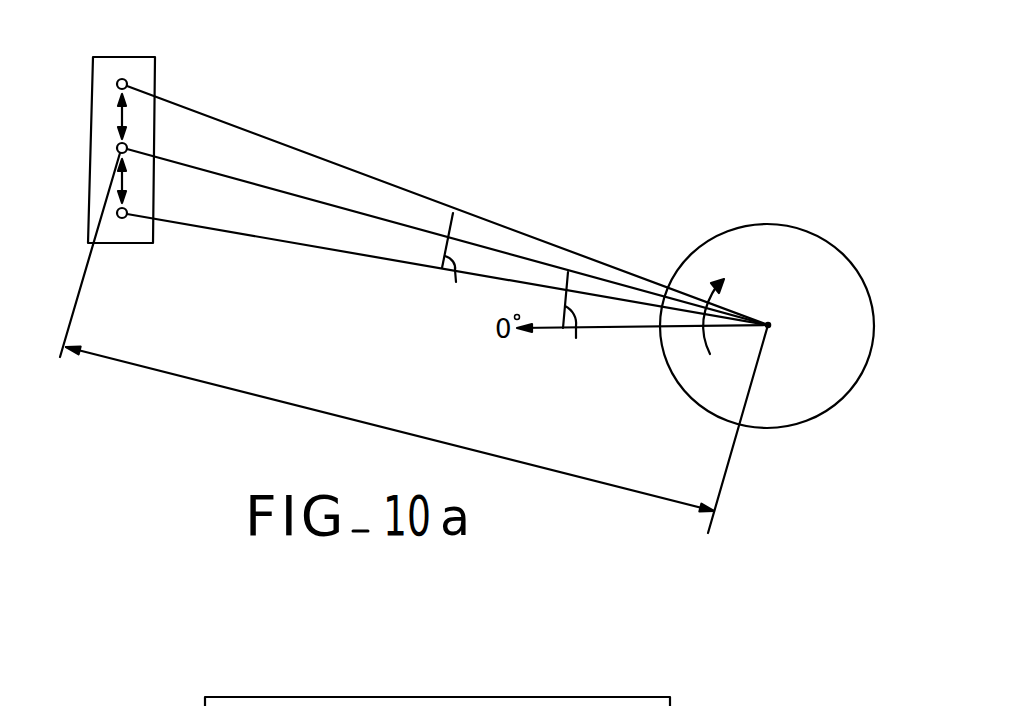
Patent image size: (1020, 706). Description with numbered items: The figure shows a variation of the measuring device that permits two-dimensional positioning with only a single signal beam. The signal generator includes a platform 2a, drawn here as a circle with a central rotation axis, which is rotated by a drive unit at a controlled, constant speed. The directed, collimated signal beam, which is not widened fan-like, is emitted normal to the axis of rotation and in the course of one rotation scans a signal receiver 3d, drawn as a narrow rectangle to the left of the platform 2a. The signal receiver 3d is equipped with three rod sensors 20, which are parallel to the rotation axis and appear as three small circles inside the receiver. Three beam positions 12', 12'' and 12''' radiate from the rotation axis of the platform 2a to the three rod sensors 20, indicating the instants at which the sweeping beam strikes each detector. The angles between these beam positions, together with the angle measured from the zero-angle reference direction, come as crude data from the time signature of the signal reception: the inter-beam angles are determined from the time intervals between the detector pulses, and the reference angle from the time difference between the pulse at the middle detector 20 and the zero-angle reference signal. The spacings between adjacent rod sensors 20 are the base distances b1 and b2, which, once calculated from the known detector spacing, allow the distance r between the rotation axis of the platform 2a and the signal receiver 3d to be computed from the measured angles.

The platform 2a is at (775, 225).
The signal receiver 3d is at (147, 57).
The rod sensors 20 is at (120, 78).
The first light beam 12' is at (447, 269).
The second light beam 12'' is at (447, 229).
The third light beam 12''' is at (447, 184).
The base distance b1 is at (128, 177).
The base distance b2 is at (128, 115).
The distance r is at (414, 343).